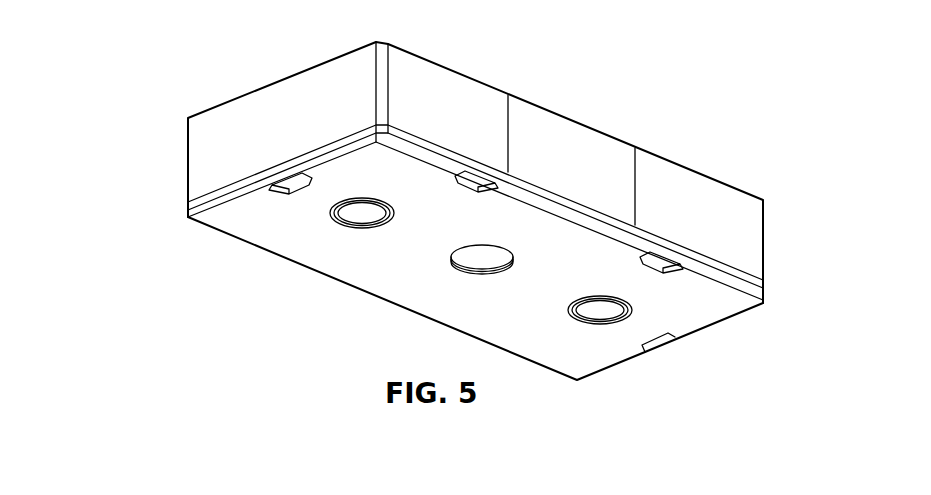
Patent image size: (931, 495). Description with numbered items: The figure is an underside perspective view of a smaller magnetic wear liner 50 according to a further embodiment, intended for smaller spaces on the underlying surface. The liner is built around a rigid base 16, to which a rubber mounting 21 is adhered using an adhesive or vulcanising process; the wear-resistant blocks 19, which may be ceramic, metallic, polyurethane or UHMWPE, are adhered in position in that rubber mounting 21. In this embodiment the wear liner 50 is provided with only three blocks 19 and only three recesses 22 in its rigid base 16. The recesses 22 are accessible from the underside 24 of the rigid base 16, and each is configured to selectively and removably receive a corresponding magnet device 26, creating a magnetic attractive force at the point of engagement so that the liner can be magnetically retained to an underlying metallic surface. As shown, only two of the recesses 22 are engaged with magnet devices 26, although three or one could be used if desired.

The magnetic wear liner 50 is at (113, 192).
The blocks 19 is at (442, 72).
The rubber mounting 21 is at (237, 187).
The underside 24 is at (698, 302).
The rigid base 16 is at (735, 285).
The recesses 22 is at (390, 203).
The magnet devices 26 is at (367, 213).